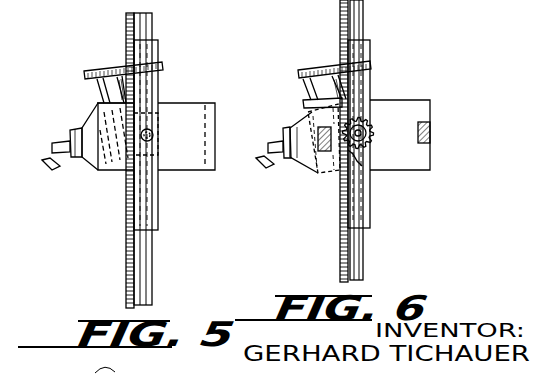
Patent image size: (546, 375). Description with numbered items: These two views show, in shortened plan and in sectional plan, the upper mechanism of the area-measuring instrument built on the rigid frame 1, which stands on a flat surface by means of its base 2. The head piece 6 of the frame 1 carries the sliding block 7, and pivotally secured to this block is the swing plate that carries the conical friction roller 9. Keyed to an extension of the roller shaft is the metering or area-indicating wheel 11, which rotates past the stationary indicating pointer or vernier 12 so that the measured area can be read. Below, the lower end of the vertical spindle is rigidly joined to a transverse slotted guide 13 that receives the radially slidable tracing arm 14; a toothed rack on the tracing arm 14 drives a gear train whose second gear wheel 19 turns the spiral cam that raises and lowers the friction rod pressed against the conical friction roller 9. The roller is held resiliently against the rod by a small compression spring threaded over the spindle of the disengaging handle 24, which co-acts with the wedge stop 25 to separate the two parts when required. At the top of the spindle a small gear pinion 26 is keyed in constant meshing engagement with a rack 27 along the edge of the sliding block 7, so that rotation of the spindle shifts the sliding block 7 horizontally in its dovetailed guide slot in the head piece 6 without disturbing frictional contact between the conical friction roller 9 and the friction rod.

In FIG. 6, the rigid frame 1 is at (431, 132).
In FIG. 6, the base 2 is at (400, 116).
In FIG. 5, the head piece 6 is at (190, 110).
In FIG. 5, the sliding block 7 is at (92, 163).
In FIG. 6, the conical friction roller 9 is at (306, 112).
In FIG. 5, the metering or area-indicating wheel 11 is at (100, 67).
In FIG. 6, the metering or area-indicating wheel 11 is at (308, 66).
In FIG. 5, the stationary indicating pointer or vernier 12 is at (96, 85).
In FIG. 6, the stationary indicating pointer or vernier 12 is at (302, 84).
In FIG. 5, the transverse slotted guide 13 is at (159, 211).
In FIG. 6, the transverse slotted guide 13 is at (372, 226).
In FIG. 5, the tracing arm 14 is at (149, 29).
In FIG. 6, the tracing arm 14 is at (362, 26).
In FIG. 5, the second gear wheel 19 is at (122, 188).
In FIG. 5, the disengaging handle 24 is at (56, 152).
In FIG. 6, the disengaging handle 24 is at (270, 152).
In FIG. 5, the wedge stop 25 is at (68, 138).
In FIG. 6, the wedge stop 25 is at (283, 136).
In FIG. 6, the small gear pinion 26 is at (373, 122).
In FIG. 6, the rack 27 is at (362, 166).